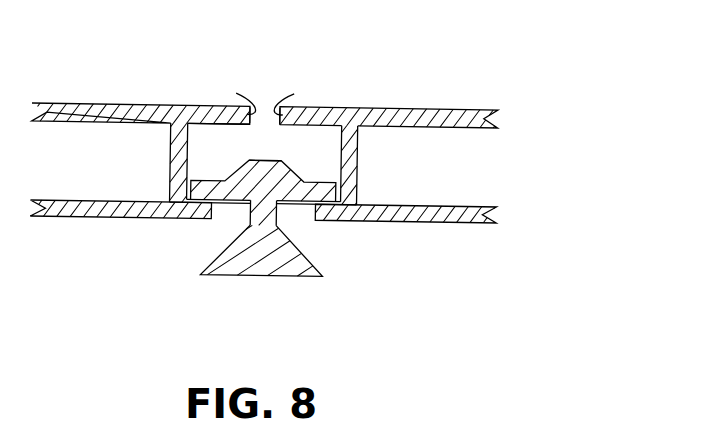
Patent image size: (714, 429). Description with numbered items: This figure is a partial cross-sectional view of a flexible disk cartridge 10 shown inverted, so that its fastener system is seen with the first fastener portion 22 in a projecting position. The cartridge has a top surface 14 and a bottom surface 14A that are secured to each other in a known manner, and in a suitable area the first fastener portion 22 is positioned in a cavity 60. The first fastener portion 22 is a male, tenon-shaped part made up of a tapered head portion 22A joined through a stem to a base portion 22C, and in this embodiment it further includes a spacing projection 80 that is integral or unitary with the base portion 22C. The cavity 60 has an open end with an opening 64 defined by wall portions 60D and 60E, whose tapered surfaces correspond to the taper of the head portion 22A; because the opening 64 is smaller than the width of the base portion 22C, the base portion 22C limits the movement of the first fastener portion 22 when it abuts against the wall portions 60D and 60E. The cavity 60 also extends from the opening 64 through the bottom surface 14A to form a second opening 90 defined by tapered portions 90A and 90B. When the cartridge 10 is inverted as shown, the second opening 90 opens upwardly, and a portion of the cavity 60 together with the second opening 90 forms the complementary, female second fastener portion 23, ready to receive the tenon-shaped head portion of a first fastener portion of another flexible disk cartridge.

The flexible disk cartridge 10 is at (509, 153).
The top surface 14 is at (443, 217).
The bottom surface 14A is at (443, 104).
The first fastener portion 22 is at (269, 284).
The head portion 22A is at (313, 263).
The base portion 22C is at (332, 188).
The second fastener portion 23 is at (235, 131).
The cavity 60 is at (321, 139).
The wall portion 60D is at (317, 201).
The wall portion 60E is at (209, 201).
The opening 64 is at (240, 212).
The spacing projection 80 is at (262, 156).
The second opening 90 is at (270, 72).
The portion 90A is at (236, 90).
The portion 90B is at (294, 90).